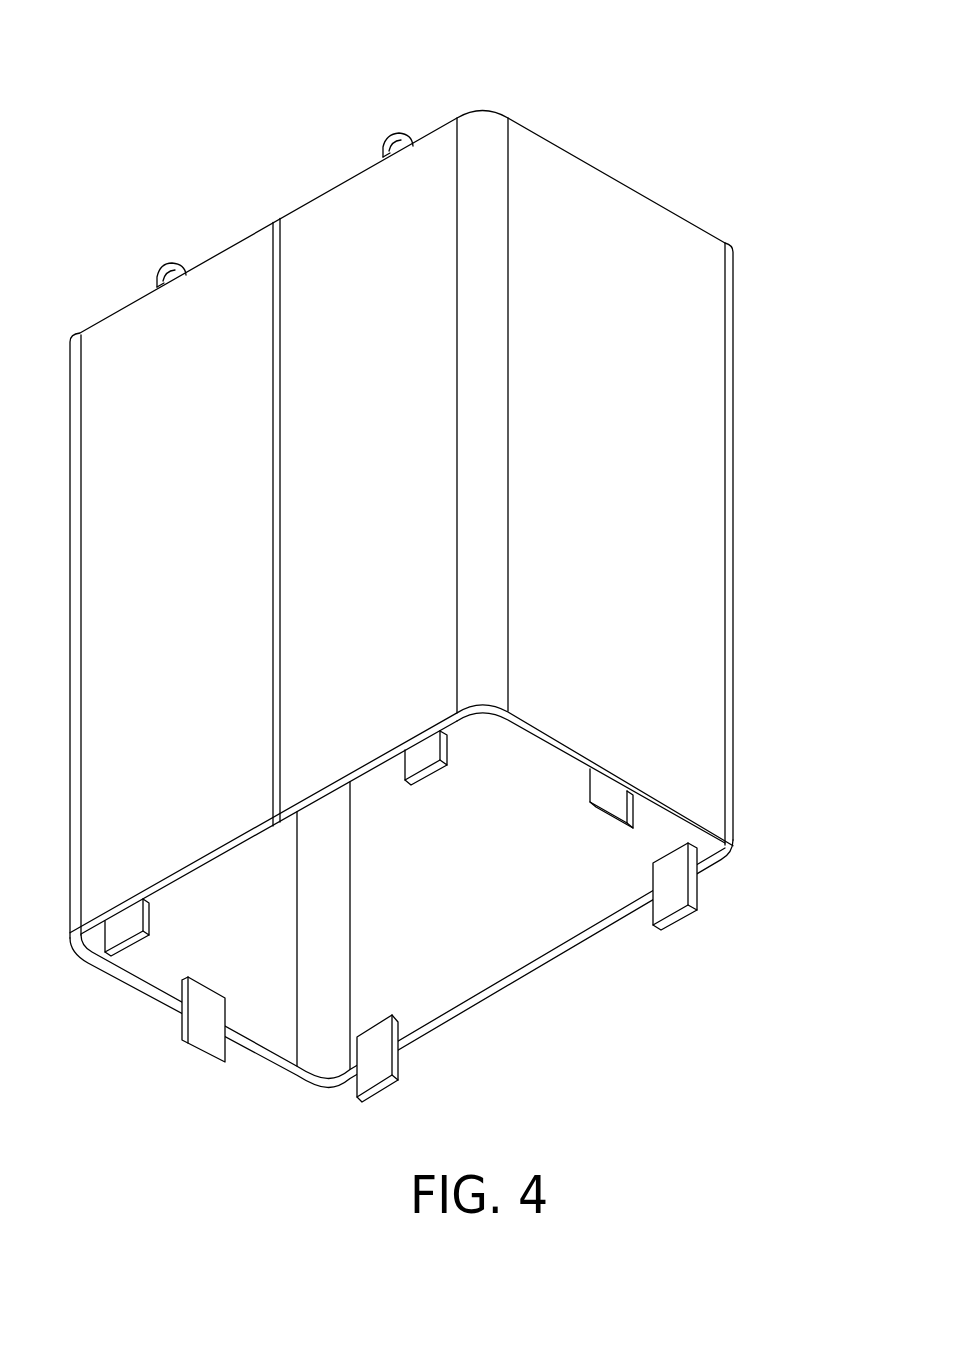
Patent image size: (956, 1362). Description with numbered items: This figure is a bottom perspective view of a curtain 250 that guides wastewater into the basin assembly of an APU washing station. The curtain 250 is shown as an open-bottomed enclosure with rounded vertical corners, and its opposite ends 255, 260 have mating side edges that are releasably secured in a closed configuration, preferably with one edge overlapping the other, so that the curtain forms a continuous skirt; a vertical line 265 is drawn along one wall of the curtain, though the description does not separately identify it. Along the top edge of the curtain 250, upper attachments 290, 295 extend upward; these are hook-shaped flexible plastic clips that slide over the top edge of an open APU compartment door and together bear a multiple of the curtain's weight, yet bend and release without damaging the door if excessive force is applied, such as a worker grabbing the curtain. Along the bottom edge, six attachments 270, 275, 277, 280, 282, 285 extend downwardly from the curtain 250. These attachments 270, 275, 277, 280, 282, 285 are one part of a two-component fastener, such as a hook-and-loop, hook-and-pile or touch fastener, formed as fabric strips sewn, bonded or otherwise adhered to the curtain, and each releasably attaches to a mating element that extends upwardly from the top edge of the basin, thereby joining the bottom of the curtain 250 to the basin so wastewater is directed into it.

The curtain 250 is at (663, 501).
The end of the curtain 255 is at (385, 733).
The end of the curtain 260 is at (207, 838).
The seam 265 is at (277, 223).
The attachment 270 is at (615, 825).
The attachment 275 is at (430, 780).
The attachment 277 is at (675, 903).
The attachment 280 is at (128, 948).
The attachment 282 is at (373, 1070).
The attachment 285 is at (208, 1033).
The attachment 290 is at (388, 137).
The attachment 295 is at (162, 265).